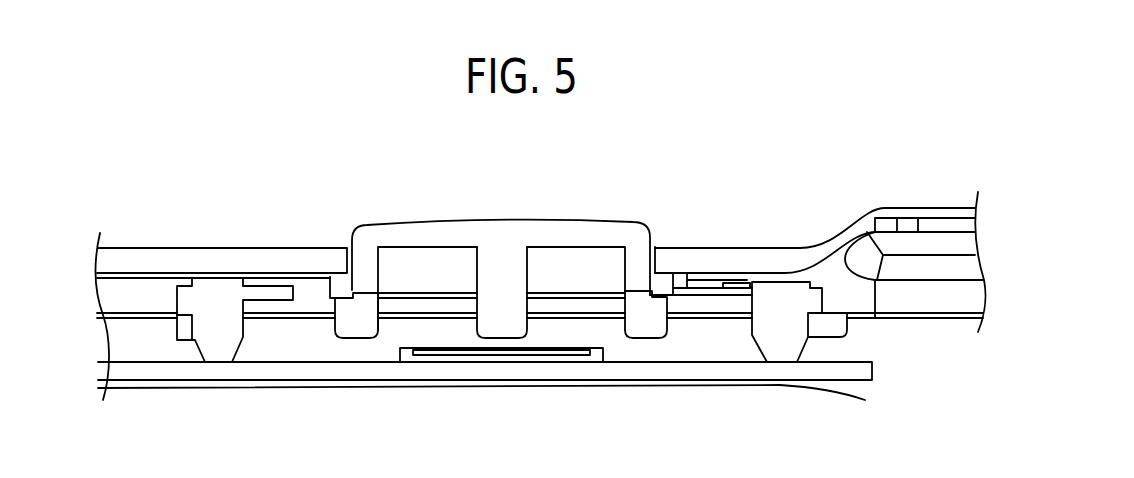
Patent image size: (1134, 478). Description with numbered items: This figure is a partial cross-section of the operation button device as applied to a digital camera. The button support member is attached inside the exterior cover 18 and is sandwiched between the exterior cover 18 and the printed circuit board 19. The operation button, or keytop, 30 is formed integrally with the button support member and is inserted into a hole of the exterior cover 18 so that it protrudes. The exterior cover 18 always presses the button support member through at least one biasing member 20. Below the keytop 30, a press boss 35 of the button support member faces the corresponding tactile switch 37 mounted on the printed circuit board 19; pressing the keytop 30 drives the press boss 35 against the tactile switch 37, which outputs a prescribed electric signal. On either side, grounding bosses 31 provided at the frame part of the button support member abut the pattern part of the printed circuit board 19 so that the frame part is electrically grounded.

The exterior cover 18 is at (218, 265).
The printed circuit board 19 is at (365, 372).
The biasing member 20 is at (708, 277).
The operation button 30 is at (502, 234).
The grounding boss 31 is at (222, 347).
The press boss 35 is at (510, 322).
The tactile switch 37 is at (495, 355).